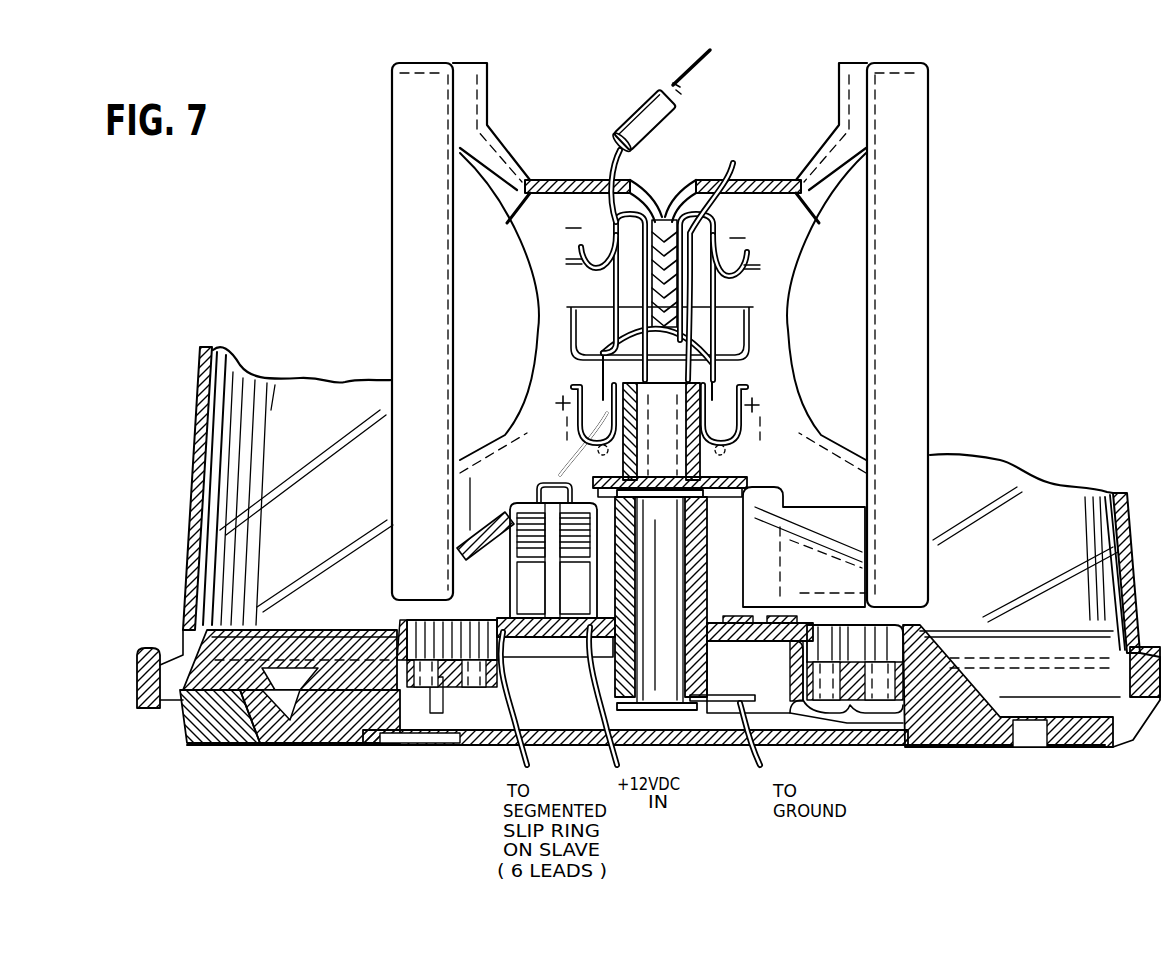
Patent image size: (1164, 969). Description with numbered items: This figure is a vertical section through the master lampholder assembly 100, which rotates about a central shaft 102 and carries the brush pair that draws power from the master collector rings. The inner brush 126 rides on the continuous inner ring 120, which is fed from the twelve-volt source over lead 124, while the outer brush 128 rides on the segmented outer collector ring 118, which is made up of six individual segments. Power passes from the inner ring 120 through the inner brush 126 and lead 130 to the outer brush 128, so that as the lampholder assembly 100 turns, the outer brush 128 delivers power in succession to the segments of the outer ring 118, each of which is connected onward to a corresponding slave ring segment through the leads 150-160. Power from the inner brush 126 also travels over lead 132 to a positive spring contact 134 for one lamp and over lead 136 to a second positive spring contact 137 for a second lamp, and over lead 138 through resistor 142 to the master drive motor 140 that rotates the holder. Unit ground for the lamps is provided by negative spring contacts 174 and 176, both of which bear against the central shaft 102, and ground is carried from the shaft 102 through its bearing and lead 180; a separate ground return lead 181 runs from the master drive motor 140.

The master lampholder assembly 100 is at (479, 323).
The central shaft 102 is at (660, 635).
The segmented outer collector ring 118 is at (505, 621).
The continuous inner ring 120 is at (590, 614).
The lead 124 is at (594, 683).
The inner brush 126 is at (573, 583).
The outer brush 128 is at (523, 582).
The lead 130 is at (535, 490).
The lead 132 is at (570, 452).
The positive spring contact 134 is at (573, 386).
The lead 136 is at (705, 340).
The second positive spring contact 137 is at (748, 388).
The lead 138 is at (613, 298).
The master drive motor 140 is at (744, 61).
The resistor 142 is at (628, 103).
The leads 150-160 is at (517, 755).
The negative spring contact 174 is at (566, 260).
The negative spring contact 176 is at (763, 263).
The lead 180 is at (780, 770).
The ground return lead 181 is at (733, 163).